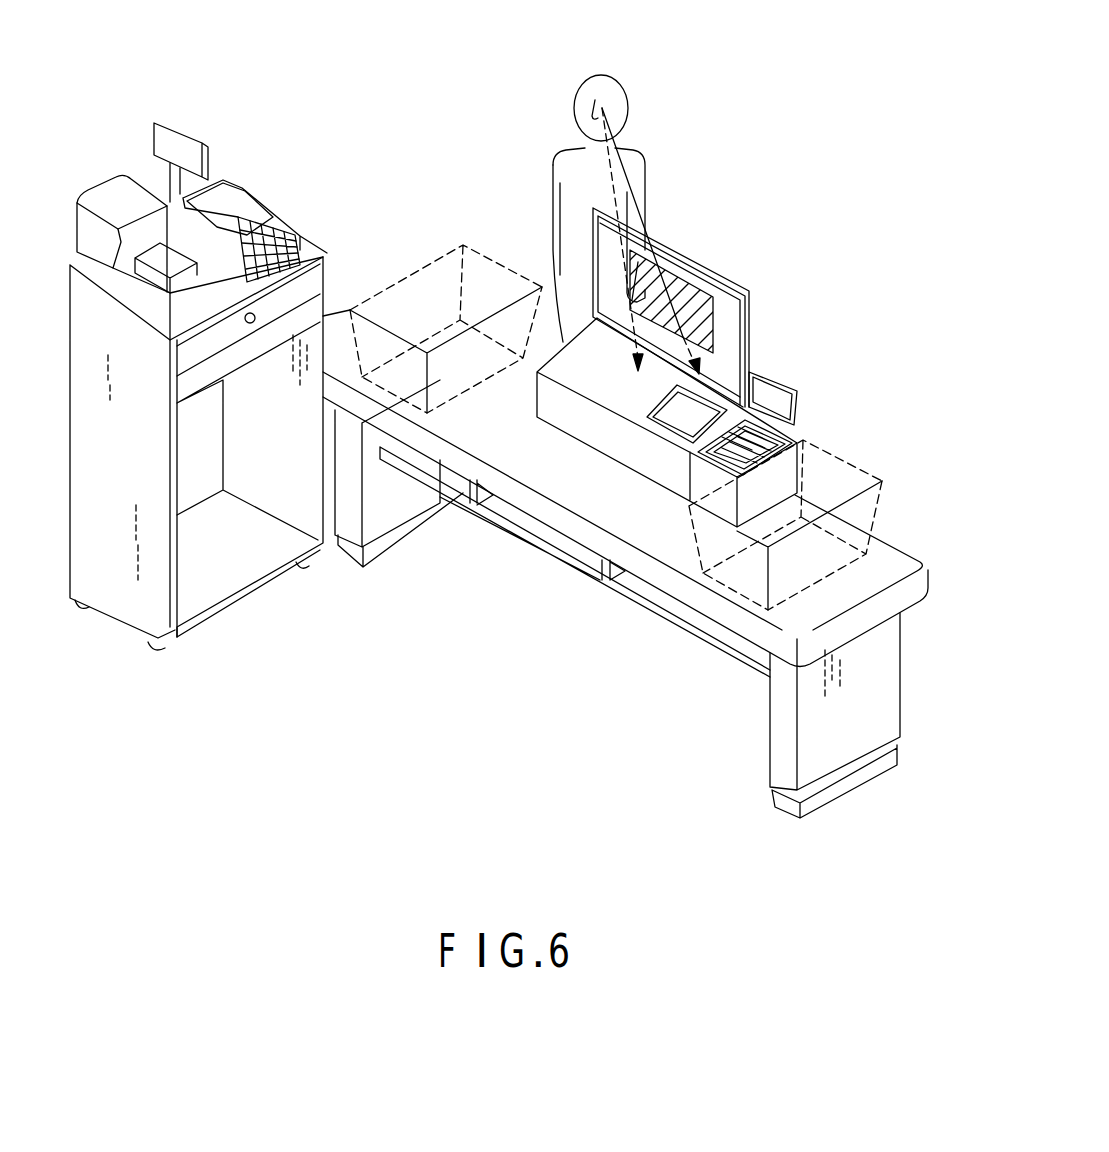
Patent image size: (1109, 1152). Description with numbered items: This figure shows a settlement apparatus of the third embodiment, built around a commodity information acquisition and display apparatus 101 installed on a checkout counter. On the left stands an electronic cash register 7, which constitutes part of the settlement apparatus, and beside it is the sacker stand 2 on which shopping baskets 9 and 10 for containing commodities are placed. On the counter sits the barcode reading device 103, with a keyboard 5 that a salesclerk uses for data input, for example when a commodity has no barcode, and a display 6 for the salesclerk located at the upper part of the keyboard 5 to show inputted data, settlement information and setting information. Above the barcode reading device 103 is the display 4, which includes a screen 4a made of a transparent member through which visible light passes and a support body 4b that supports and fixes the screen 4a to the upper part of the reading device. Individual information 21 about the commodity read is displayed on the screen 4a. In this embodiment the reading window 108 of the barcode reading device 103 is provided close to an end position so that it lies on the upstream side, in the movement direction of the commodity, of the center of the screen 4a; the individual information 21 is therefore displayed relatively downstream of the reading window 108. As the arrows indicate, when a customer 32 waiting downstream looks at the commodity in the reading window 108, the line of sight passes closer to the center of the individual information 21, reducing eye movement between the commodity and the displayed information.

The electronic cash register 7 is at (316, 107).
The commodity information acquisition and display apparatus 101 is at (730, 86).
The customer 32 is at (582, 80).
The shopping basket 10 is at (437, 262).
The display 4 is at (798, 206).
The screen 4a is at (707, 287).
The support body 4b is at (753, 306).
The individual information 21 is at (752, 322).
The display for salesclerk 6 is at (782, 405).
The shopping basket 9 is at (862, 465).
The sacker stand 2 is at (888, 565).
The barcode reading device 103 is at (562, 410).
The reading window 108 is at (650, 408).
The keyboard 5 is at (688, 453).